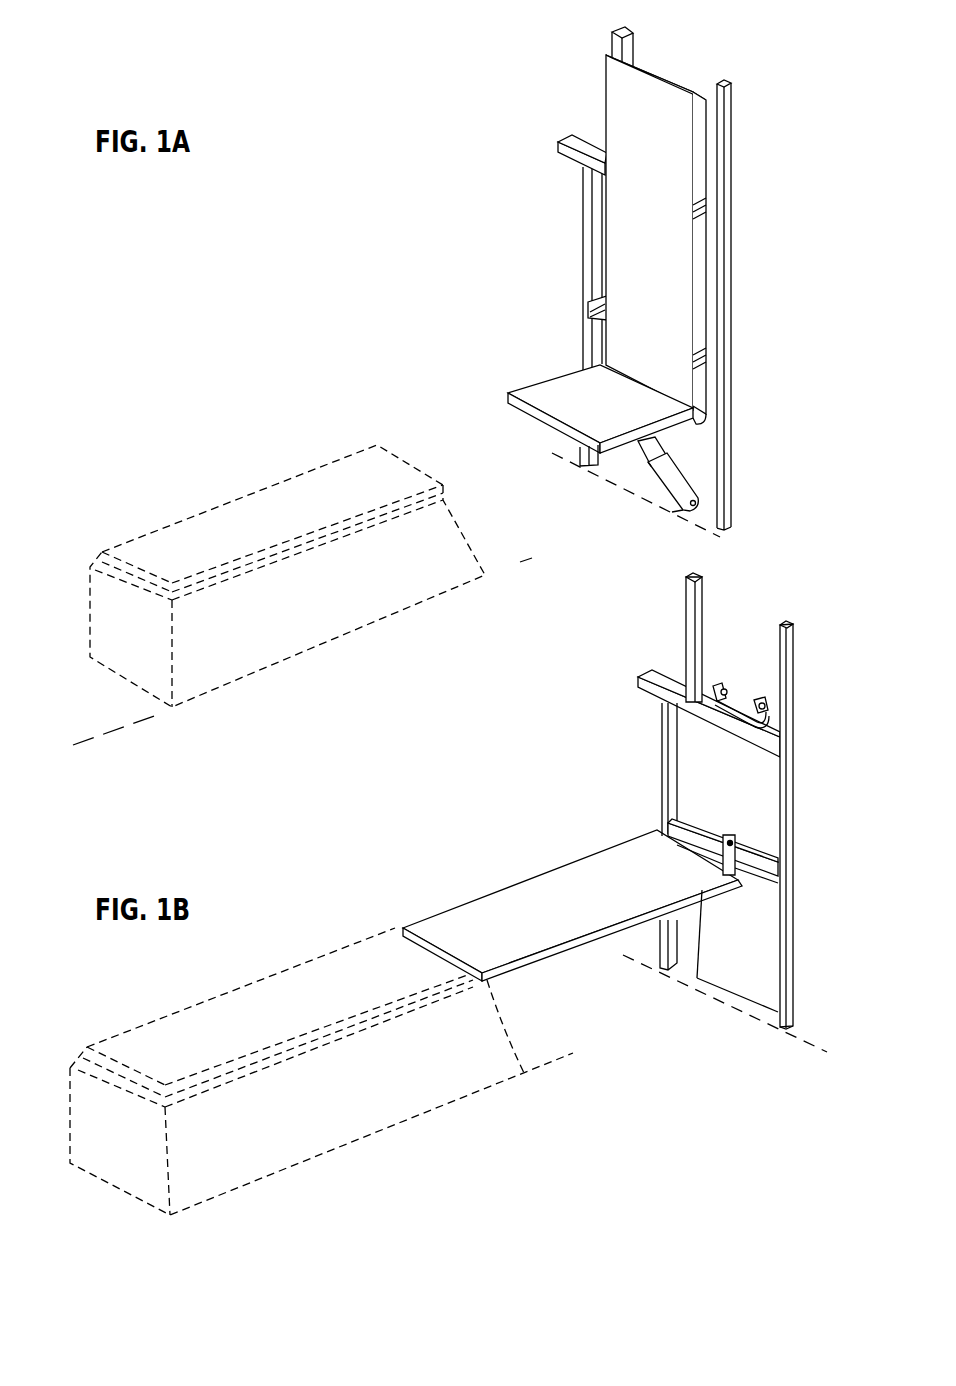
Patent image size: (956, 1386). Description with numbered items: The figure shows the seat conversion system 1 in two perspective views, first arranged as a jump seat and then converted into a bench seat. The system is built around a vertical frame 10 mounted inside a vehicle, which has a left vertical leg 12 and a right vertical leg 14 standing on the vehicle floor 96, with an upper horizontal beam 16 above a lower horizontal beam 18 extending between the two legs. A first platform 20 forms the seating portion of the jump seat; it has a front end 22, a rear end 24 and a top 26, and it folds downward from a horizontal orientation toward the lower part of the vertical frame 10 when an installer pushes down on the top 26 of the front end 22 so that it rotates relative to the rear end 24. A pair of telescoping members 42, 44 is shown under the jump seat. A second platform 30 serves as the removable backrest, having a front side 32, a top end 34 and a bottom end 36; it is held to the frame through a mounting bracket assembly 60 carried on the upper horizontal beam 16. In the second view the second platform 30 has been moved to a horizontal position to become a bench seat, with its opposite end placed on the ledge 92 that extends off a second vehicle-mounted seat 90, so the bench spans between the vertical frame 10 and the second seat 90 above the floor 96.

In FIG. 1A, the first seat conversion system 1 is at (303, 223).
In FIG. 1B, the first seat conversion system 1 is at (503, 738).
In FIG. 1A, the first vertical frame 10 is at (735, 258).
In FIG. 1B, the first vertical frame 10 is at (797, 780).
In FIG. 1A, the left vertical leg 12 is at (588, 210).
In FIG. 1B, the left vertical leg 12 is at (669, 777).
In FIG. 1A, the right vertical leg 14 is at (727, 308).
In FIG. 1B, the right vertical leg 14 is at (795, 678).
In FIG. 1A, the upper horizontal beam 16 is at (580, 147).
In FIG. 1B, the upper horizontal beam 16 is at (725, 727).
In FIG. 1A, the lower horizontal beam 18 is at (586, 308).
In FIG. 1B, the lower horizontal beam 18 is at (697, 828).
In FIG. 1A, the first platform 20 is at (557, 373).
In FIG. 1B, the first platform 20 is at (700, 993).
In FIG. 1B, the front end 22 is at (737, 1000).
In FIG. 1B, the rear end 24 is at (760, 896).
In FIG. 1B, the top 26 is at (753, 958).
In FIG. 1A, the second platform 30 is at (680, 73).
In FIG. 1B, the second platform 30 is at (515, 873).
In FIG. 1A, the front side 32 is at (678, 215).
In FIG. 1B, the front side 32 is at (488, 910).
In FIG. 1A, the top end 34 is at (687, 92).
In FIG. 1B, the top end 34 is at (695, 858).
In FIG. 1A, the bottom end 36 is at (693, 423).
In FIG. 1B, the bottom end 36 is at (432, 942).
In FIG. 1A, the telescoping member 42 is at (628, 483).
In FIG. 1A, the telescoping member 44 is at (646, 479).
In FIG. 1B, the mounting bracket assembly 60 is at (743, 694).
In FIG. 1A, the second seat 90 is at (283, 630).
In FIG. 1B, the second seat 90 is at (325, 1138).
In FIG. 1A, the ledge 92 is at (449, 493).
In FIG. 1B, the ledge 92 is at (483, 980).
In FIG. 1A, the floor 96 is at (713, 537).
In FIG. 1B, the floor 96 is at (623, 962).